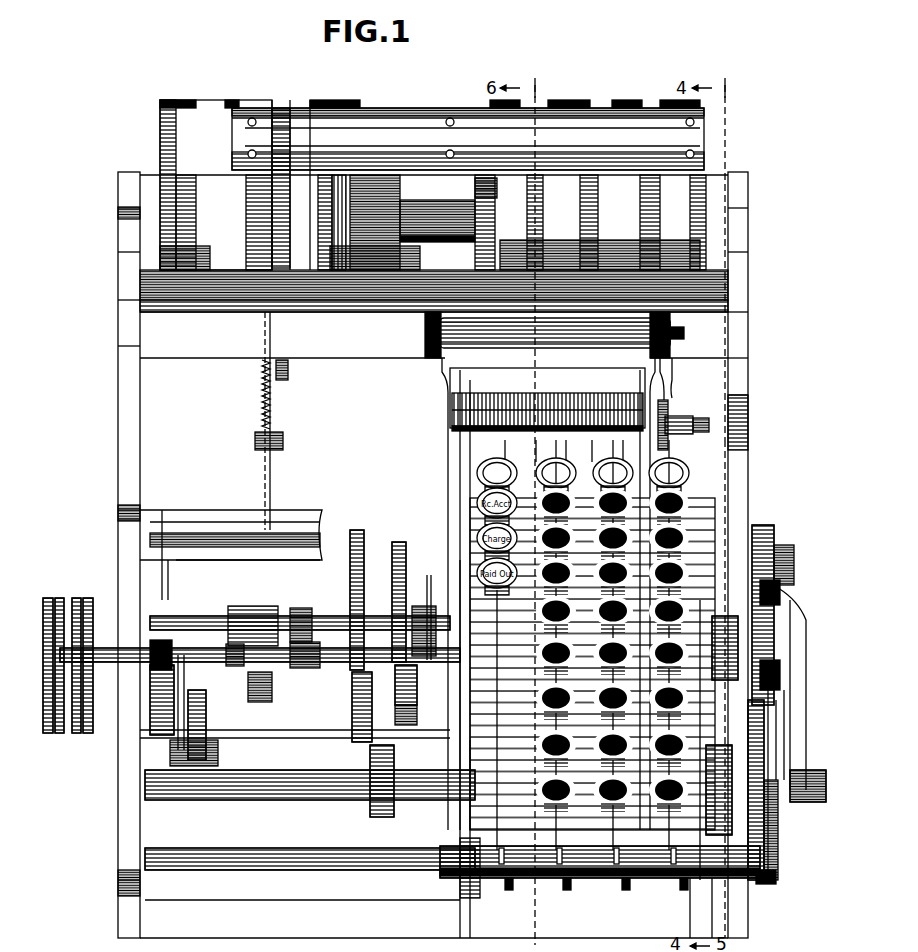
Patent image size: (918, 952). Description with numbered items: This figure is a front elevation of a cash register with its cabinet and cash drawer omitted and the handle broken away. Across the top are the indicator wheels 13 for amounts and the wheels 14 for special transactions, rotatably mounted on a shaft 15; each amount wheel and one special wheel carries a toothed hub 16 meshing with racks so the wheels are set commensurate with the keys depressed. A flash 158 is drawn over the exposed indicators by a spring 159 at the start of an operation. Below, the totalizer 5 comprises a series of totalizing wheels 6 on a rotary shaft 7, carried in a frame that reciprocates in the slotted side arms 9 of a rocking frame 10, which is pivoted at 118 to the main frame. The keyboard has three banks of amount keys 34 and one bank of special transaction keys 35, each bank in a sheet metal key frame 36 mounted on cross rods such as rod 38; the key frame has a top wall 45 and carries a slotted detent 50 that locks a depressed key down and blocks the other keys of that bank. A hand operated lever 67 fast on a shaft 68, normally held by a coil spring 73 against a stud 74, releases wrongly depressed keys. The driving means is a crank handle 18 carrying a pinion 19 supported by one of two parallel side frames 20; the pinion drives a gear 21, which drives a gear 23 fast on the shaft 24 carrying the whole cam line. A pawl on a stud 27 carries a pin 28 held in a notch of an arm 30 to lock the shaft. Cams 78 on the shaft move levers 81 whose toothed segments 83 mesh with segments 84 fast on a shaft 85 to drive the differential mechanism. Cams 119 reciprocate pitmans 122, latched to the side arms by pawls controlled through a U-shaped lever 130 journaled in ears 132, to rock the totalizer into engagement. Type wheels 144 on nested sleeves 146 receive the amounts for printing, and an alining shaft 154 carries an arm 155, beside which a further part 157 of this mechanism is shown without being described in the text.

The totalizer 5 is at (458, 452).
The totalizing wheels 6 is at (460, 398).
The rotary shaft 7 is at (706, 422).
The slotted side arms 9 is at (434, 494).
The rocking frame 10 is at (440, 374).
The indicator wheels 13 is at (258, 100).
The special transaction wheels 14 is at (334, 104).
The shaft 15 is at (426, 222).
The toothed hubs 16 is at (476, 186).
The crank handle 18 is at (798, 620).
The pinion 19 is at (754, 524).
The side frames 20 is at (118, 362).
The gear 21 is at (775, 632).
The gear 23 is at (760, 712).
The shaft 24 is at (322, 626).
The stud 27 is at (778, 780).
The pin 28 is at (786, 746).
The arm 30 is at (770, 706).
The amount keys 34 is at (554, 465).
The special transaction keys 35 is at (492, 465).
The key frame 36 is at (610, 870).
The cross rod 38 is at (628, 876).
The top wall 45 is at (482, 820).
The detent 50 is at (680, 890).
The hand operated lever 67 is at (778, 838).
The shaft 68 is at (318, 872).
The coil spring 73 is at (776, 876).
The stud 74 is at (778, 740).
The cams 78 is at (356, 546).
The levers 81 is at (398, 560).
The toothed segments 83 is at (372, 680).
The toothed segments 84 is at (384, 758).
The shaft 85 is at (338, 810).
The pivot 118 is at (684, 333).
The cams 119 is at (414, 716).
The pitmans 122 is at (439, 610).
The U-shaped lever 130 is at (432, 654).
The ears 132 is at (302, 620).
The type wheels 144 is at (90, 598).
The nested sleeves 146 is at (222, 678).
The shaft 154 is at (172, 750).
The arm 155 is at (184, 702).
The gear 157 is at (150, 706).
The flash 158 is at (412, 106).
The spring 159 is at (258, 409).